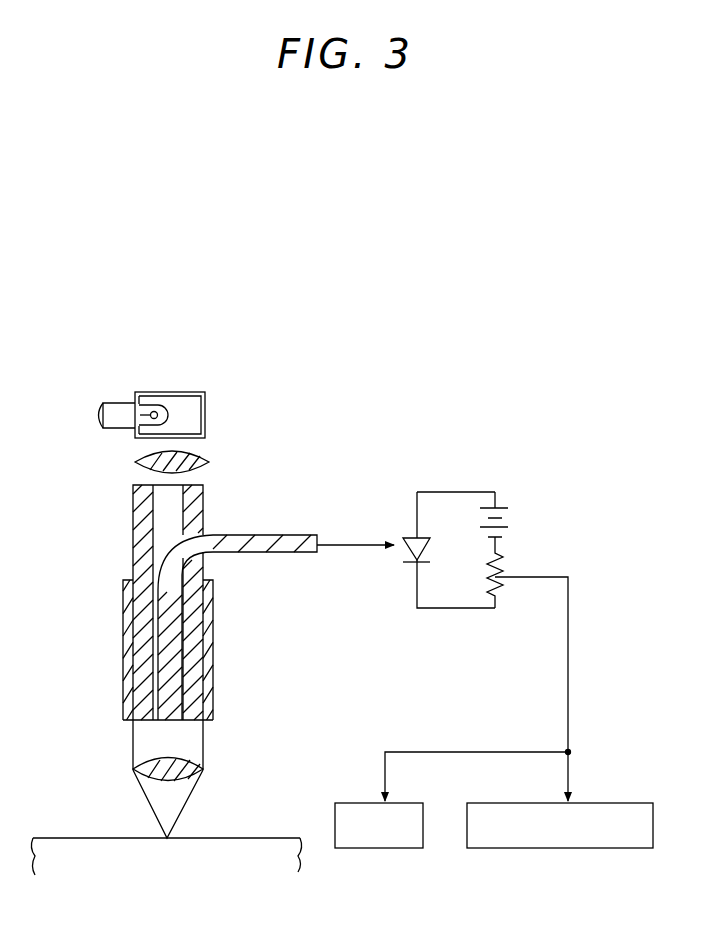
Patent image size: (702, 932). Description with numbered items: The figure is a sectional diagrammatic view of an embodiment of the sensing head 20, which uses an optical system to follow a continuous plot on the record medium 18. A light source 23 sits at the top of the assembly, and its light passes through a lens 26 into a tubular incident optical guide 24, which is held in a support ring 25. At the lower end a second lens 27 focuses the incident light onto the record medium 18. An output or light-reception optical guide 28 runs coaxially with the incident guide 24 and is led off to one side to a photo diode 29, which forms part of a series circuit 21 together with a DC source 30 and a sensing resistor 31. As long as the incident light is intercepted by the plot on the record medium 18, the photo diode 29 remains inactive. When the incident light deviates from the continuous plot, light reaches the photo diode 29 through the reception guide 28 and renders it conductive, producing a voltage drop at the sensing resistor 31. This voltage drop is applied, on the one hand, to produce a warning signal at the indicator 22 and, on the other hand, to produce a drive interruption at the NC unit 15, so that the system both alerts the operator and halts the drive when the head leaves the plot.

The NC unit 15 is at (335, 810).
The record medium 18 is at (50, 848).
The sensing head 20 is at (304, 458).
The circuit 21 is at (483, 488).
The indicator 22 is at (485, 803).
The light source 23 is at (183, 405).
The tubular incident optical guide 24 is at (130, 610).
The support ring 25 is at (209, 671).
The lens 26 is at (200, 460).
The lens 27 is at (185, 767).
The output optical guide 28 is at (165, 683).
The photo diode 29 is at (408, 552).
The DC source 30 is at (510, 520).
The sensing resistor 31 is at (500, 575).